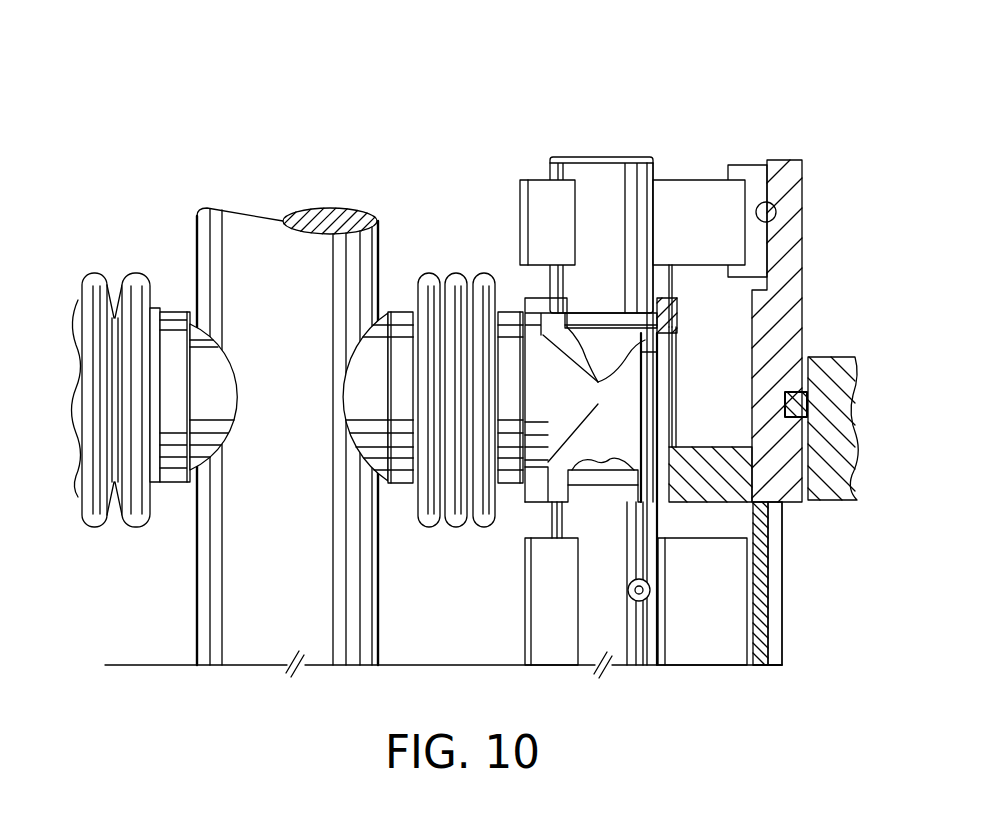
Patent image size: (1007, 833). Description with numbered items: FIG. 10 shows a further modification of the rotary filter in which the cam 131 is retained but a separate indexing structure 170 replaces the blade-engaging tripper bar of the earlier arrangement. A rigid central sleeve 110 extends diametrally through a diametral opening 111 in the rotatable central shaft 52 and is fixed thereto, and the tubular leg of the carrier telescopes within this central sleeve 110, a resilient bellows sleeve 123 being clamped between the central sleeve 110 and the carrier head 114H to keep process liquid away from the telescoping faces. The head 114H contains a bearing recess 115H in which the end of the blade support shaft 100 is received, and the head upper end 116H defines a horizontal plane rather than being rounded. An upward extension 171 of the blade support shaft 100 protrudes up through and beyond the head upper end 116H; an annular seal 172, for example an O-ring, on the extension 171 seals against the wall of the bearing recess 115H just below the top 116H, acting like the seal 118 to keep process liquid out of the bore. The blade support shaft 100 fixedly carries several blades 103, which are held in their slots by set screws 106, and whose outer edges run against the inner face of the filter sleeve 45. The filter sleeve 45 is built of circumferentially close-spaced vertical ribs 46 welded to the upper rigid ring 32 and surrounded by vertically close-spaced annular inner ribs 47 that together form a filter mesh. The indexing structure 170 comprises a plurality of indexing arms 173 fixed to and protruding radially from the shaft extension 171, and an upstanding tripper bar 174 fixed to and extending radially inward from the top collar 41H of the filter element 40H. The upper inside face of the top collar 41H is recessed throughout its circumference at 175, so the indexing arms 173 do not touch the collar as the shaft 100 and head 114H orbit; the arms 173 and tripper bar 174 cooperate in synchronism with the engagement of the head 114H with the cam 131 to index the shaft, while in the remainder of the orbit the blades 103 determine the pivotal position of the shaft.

The indexing structure 170 is at (660, 176).
The upward extension of the blade support shaft 171 is at (602, 175).
The indexing arms 173 is at (668, 187).
The head upper end 116H is at (674, 292).
The tripper bar 174 is at (743, 175).
The recess 175 is at (777, 214).
The central shaft 52 is at (352, 218).
The bellows sleeve 123 is at (452, 285).
The central sleeve 110 is at (208, 365).
The diametral opening 111 is at (225, 390).
The annular seal 172 is at (587, 317).
The top collar 41H is at (762, 344).
The bearing recess 115H is at (605, 380).
The bracket 131 is at (713, 448).
The head 114H is at (533, 505).
The annular seal 118 is at (602, 483).
The set screws 106 is at (628, 590).
The blades 103 is at (542, 623).
The blade support shaft 100 is at (632, 648).
The upper rigid ring 32 is at (845, 473).
The vertical ribs 46 is at (775, 552).
The annular inner ribs 47 is at (762, 568).
The filter sleeve 45 is at (795, 623).
The filter element 40H is at (796, 661).